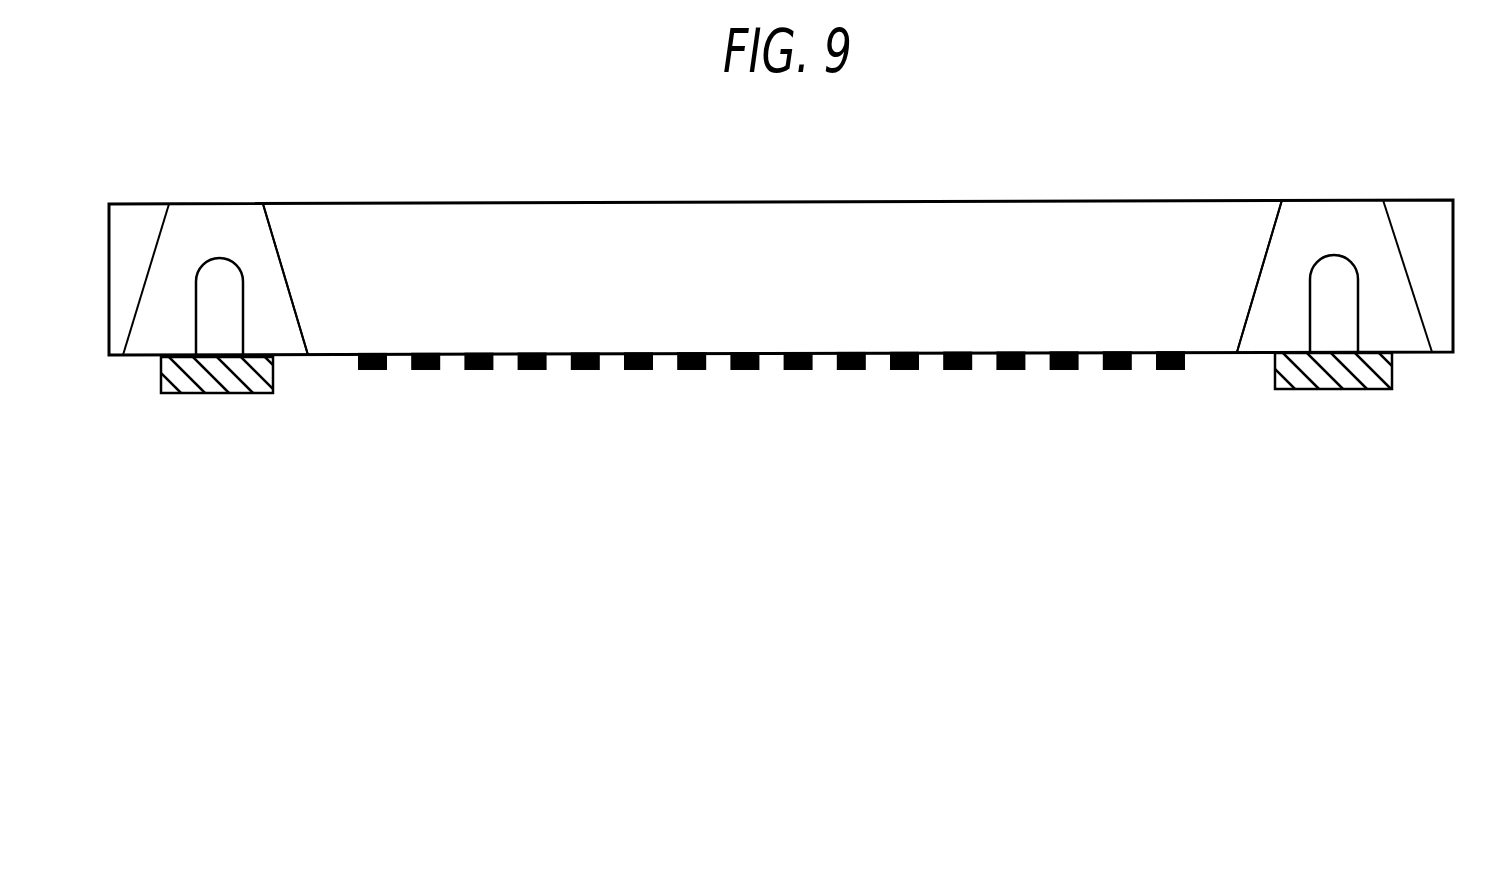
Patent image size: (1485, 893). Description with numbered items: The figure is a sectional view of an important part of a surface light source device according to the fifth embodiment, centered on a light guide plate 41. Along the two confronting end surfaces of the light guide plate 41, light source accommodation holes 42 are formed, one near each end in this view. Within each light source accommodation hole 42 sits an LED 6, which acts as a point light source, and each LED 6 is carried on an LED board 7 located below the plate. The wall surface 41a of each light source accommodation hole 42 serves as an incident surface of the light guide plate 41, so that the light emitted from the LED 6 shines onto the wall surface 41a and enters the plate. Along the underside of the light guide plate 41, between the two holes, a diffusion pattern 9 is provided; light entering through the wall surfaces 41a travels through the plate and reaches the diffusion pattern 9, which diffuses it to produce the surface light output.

The light guide plate 41 is at (997, 200).
The wall surface 41a is at (279, 255).
The light source accommodation hole 42 is at (226, 191).
The LED 6 is at (200, 273).
The LED board 7 is at (207, 393).
The diffusion pattern 9 is at (483, 370).